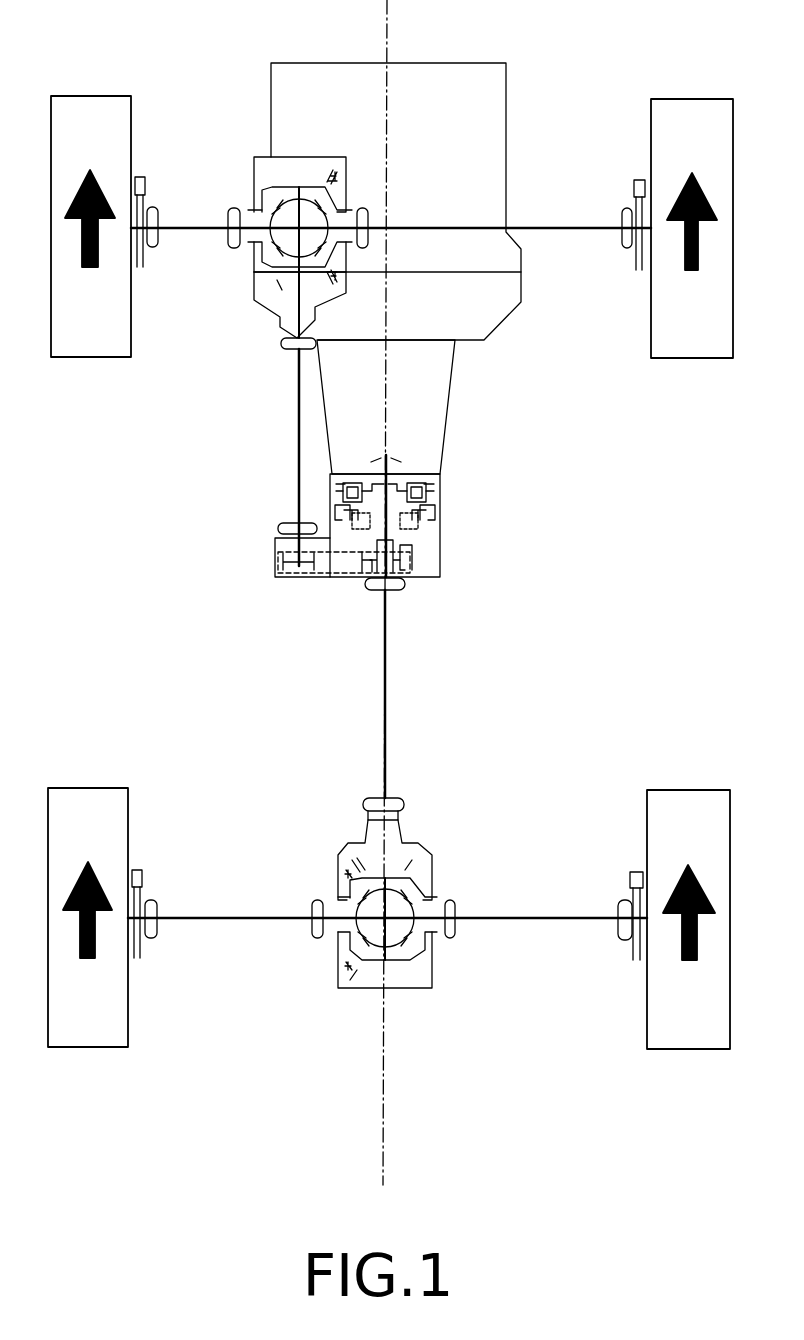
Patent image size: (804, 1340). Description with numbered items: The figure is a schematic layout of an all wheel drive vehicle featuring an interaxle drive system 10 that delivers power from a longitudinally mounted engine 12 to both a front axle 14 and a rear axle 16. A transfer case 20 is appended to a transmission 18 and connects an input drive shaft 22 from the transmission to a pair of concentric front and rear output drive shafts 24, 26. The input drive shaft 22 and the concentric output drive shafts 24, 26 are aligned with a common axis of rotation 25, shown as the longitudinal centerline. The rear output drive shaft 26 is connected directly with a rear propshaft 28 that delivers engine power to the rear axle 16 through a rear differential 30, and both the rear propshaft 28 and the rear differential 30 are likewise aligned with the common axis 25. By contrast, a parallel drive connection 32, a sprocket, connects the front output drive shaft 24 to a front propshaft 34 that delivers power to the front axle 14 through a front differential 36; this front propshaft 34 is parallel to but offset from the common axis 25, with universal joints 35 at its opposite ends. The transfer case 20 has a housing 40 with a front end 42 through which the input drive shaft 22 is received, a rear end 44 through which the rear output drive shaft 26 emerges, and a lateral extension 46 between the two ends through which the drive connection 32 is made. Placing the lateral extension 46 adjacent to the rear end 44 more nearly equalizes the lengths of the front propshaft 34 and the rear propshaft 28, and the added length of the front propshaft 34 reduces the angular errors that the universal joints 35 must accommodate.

The interaxle drive system 10 is at (390, 592).
The engine 12 is at (460, 141).
The front axle 14 is at (566, 222).
The rear axle 16 is at (518, 920).
The transmission 18 is at (410, 391).
The transfer case 20 is at (448, 549).
The input drive shaft 22 is at (392, 456).
The front output drive shaft 24 is at (412, 560).
The common axis of rotation 25 is at (386, 24).
The rear output drive shaft 26 is at (362, 578).
The rear propshaft 28 is at (388, 738).
The rear differential 30 is at (338, 968).
The parallel drive connection 32 is at (317, 578).
The front propshaft 34 is at (298, 428).
The universal joints 35 is at (280, 343).
The front differential 36 is at (267, 160).
The housing 40 is at (440, 522).
The front end 42 is at (348, 462).
The rear end 44 is at (408, 590).
The lateral extension 46 is at (275, 557).